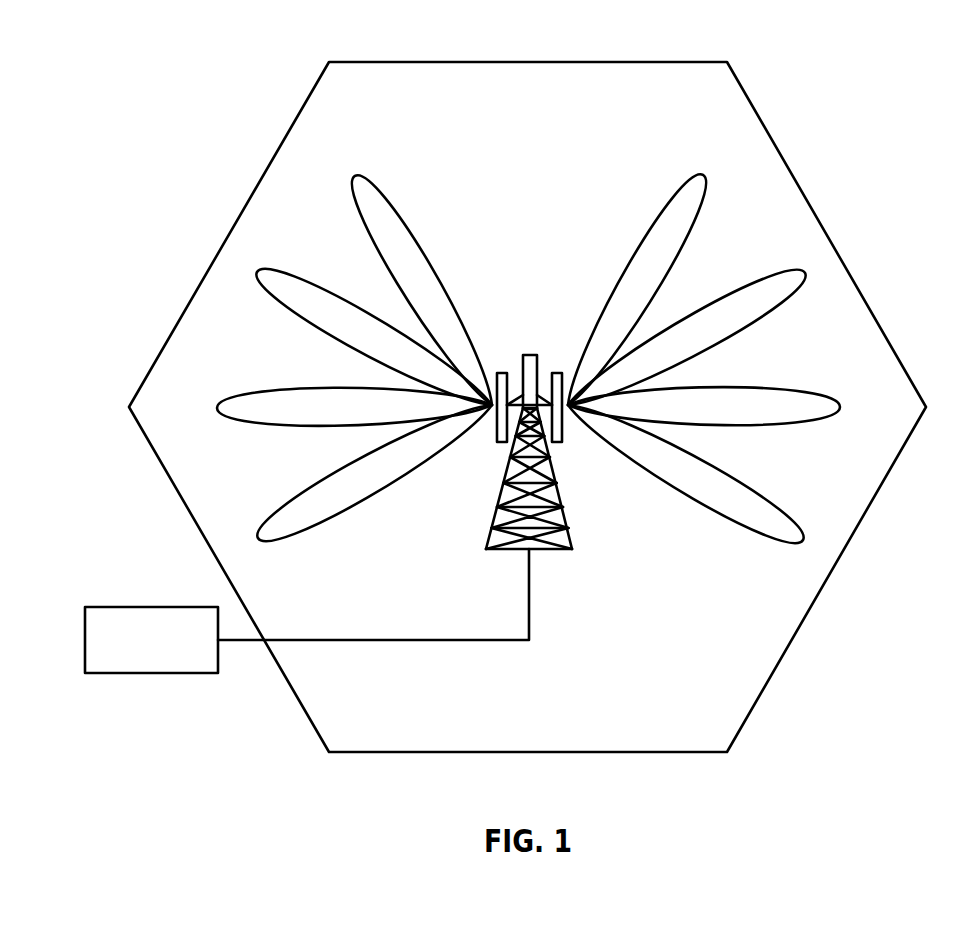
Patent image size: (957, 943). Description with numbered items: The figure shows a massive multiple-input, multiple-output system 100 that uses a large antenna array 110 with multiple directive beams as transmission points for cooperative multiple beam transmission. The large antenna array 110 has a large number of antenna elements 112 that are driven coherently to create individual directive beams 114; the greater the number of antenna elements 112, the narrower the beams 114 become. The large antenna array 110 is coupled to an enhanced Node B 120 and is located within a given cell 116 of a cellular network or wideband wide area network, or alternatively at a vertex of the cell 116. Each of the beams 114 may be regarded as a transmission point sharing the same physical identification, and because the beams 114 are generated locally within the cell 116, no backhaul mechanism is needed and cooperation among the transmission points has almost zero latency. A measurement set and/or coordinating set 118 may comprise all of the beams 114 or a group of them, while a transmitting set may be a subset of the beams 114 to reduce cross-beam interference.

The massive MIMO system 100 is at (830, 86).
The large antenna array 110 is at (563, 517).
The antenna elements 112 is at (520, 330).
The directive beams 114 is at (384, 168).
The cell 116 is at (857, 278).
The measurement set and/or coordinating set 118 is at (272, 350).
The enhanced Node B (eNB) 120 is at (118, 607).